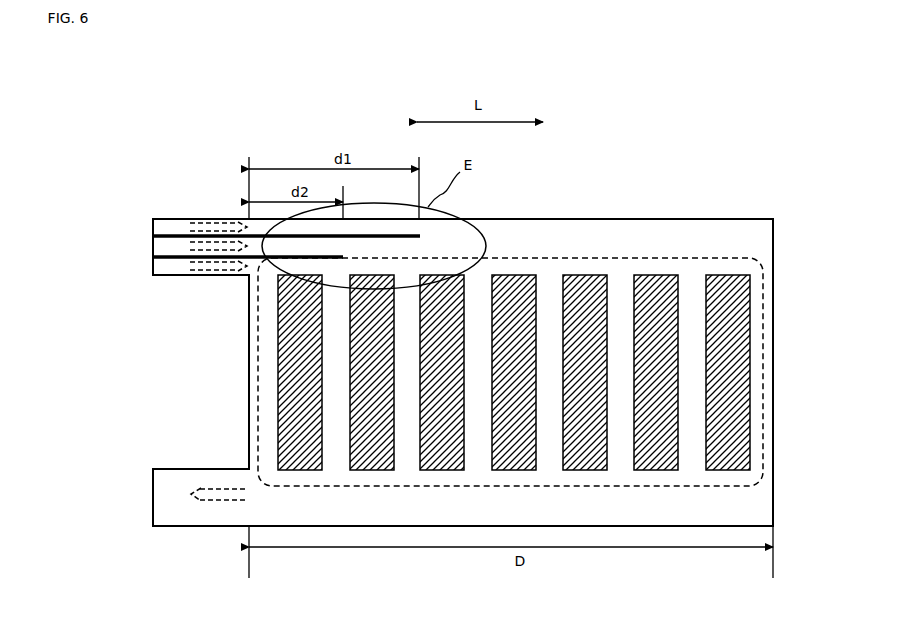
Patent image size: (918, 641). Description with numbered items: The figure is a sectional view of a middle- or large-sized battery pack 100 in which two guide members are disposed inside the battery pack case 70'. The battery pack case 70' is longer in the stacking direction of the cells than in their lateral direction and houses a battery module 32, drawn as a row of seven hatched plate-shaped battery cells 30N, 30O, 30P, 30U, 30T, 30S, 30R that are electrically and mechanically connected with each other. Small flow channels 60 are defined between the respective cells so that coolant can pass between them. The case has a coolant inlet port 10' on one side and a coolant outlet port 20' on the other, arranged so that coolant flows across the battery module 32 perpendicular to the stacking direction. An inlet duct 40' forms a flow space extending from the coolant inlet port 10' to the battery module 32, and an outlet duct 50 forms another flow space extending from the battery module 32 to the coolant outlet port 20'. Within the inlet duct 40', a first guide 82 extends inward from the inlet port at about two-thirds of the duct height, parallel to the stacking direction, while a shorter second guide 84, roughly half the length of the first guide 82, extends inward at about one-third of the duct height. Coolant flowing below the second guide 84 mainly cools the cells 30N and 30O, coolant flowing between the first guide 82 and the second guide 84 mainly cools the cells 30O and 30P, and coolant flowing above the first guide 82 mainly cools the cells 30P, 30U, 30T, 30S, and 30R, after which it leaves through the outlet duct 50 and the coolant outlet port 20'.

The middle- or large-sized battery pack 100 is at (85, 105).
The coolant inlet port 10' is at (175, 228).
The first guide 82 is at (171, 218).
The second guide 84 is at (247, 276).
The inlet duct 40' is at (152, 305).
The battery pack case 70' is at (511, 179).
The flow channels 60 is at (620, 284).
The battery module 32 is at (700, 258).
The outlet duct 50 is at (165, 485).
The coolant outlet port 20' is at (121, 517).
The battery cell 30N is at (302, 440).
The battery cell 30O is at (368, 460).
The battery cell 30P is at (438, 460).
The battery cell 30U is at (510, 460).
The battery cell 30T is at (580, 460).
The battery cell 30S is at (652, 460).
The battery cell 30R is at (724, 460).